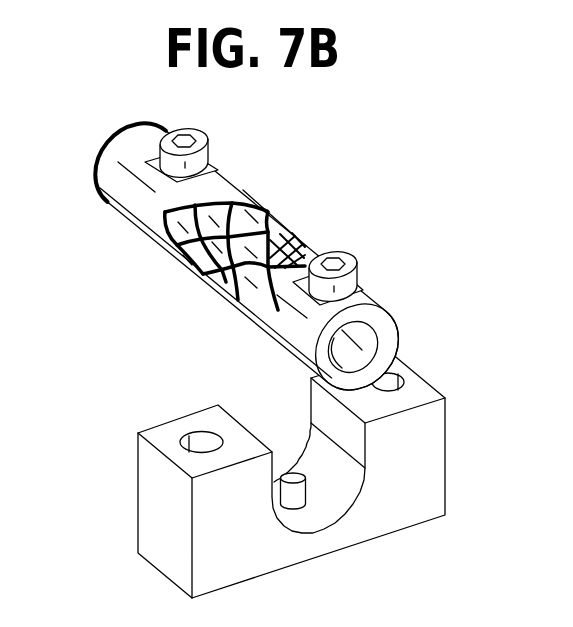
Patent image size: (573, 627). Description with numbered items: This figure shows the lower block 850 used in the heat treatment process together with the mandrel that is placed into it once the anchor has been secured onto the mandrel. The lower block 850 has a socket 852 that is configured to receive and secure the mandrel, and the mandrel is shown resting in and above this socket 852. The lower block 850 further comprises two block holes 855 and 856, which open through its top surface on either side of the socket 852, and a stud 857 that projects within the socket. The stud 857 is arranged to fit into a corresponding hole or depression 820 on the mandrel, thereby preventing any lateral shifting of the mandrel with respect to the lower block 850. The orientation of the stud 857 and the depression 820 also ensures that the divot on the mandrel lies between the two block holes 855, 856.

The depression 820 is at (338, 344).
The lower block 850 is at (150, 496).
The socket 852 is at (285, 430).
The block hole 855 is at (200, 438).
The block hole 856 is at (400, 378).
The stud 857 is at (292, 498).